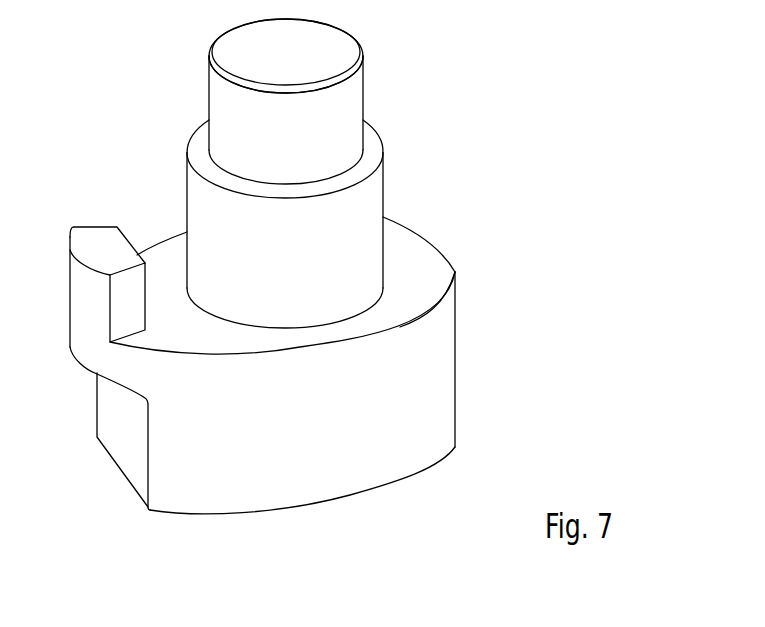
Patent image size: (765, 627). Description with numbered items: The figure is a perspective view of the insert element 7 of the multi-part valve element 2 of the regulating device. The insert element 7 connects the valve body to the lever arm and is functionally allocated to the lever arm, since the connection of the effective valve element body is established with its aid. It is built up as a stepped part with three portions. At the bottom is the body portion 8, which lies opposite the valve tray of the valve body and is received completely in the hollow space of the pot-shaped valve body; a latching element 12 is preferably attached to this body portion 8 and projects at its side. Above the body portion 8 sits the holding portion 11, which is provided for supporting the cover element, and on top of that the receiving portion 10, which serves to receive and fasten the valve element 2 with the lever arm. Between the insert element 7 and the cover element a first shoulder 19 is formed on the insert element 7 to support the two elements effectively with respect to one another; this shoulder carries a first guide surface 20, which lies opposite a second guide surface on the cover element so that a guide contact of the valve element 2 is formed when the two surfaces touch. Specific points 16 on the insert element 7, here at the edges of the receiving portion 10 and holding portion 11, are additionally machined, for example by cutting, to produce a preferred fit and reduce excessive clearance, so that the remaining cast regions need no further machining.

The valve element 2 is at (542, 150).
The insert element 7 is at (466, 342).
The body portion 8 is at (288, 426).
The receiving portion 10 is at (303, 148).
The holding portion 11 is at (300, 272).
The latching element 12 is at (95, 238).
The points 16 is at (362, 90).
The first shoulder 19 is at (433, 267).
The first guide surface 20 is at (425, 291).